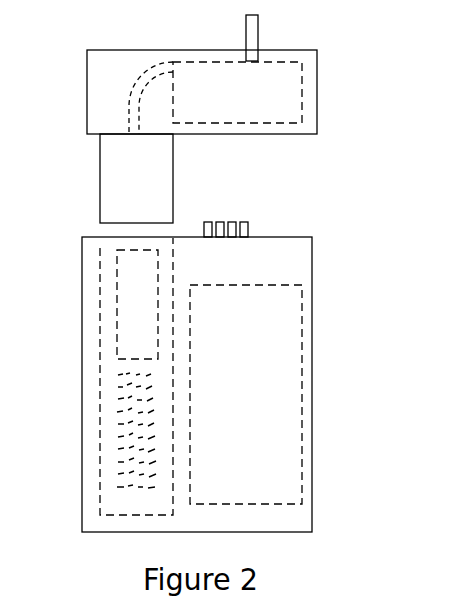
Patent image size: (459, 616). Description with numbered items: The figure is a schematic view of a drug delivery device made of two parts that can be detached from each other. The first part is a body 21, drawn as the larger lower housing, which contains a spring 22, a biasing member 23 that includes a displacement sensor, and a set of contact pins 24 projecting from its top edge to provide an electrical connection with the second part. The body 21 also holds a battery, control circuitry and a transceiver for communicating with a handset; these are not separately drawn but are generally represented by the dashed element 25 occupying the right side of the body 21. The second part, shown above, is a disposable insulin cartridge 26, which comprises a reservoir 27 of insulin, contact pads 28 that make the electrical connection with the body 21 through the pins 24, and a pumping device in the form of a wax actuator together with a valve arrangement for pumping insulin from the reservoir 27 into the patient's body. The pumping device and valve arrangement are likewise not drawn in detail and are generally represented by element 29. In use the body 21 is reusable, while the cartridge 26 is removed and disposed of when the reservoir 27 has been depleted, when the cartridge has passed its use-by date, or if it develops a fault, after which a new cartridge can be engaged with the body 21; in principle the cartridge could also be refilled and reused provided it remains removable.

The body 21 is at (312, 267).
The spring 22 is at (117, 412).
The biasing member 23 is at (117, 338).
The contact pins 24 is at (248, 225).
The battery, control circuitry and transceiver 25 is at (302, 402).
The disposable insulin cartridge 26 is at (317, 120).
The reservoir 27 is at (117, 202).
The contact pads 28 is at (218, 134).
The pumping device and valve arrangement 29 is at (317, 67).